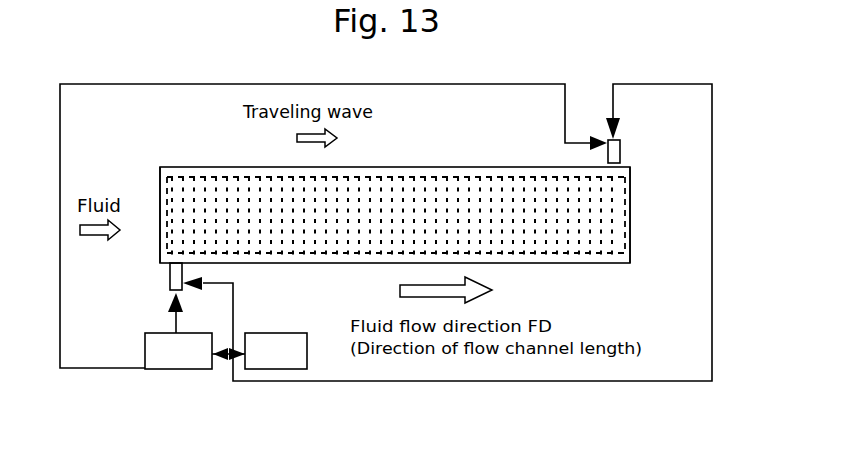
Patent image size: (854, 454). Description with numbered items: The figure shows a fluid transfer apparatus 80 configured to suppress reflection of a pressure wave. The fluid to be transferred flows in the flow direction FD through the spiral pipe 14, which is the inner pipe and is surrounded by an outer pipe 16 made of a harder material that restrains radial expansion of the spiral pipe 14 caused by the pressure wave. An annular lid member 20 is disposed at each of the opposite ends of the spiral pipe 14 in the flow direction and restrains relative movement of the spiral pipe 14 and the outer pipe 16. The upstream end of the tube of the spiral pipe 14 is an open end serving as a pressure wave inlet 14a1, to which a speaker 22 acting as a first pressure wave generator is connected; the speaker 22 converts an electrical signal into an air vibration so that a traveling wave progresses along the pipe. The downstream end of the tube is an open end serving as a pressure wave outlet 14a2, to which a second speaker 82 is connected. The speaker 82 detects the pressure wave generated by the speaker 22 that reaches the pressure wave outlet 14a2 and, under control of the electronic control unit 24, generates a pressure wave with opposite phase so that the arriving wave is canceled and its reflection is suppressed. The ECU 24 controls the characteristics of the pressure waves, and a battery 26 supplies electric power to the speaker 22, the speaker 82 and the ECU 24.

The fluid transfer apparatus 80 is at (212, 145).
The spiral pipe 14 is at (435, 188).
The outer pipe 16 is at (487, 170).
The lid member 20 is at (170, 188).
The pressure wave inlet 14a1 is at (161, 263).
The pressure wave outlet 14a2 is at (665, 164).
The speaker 22 is at (170, 290).
The speaker 82 is at (620, 142).
The electronic control unit 24 is at (182, 370).
The battery 26 is at (264, 333).